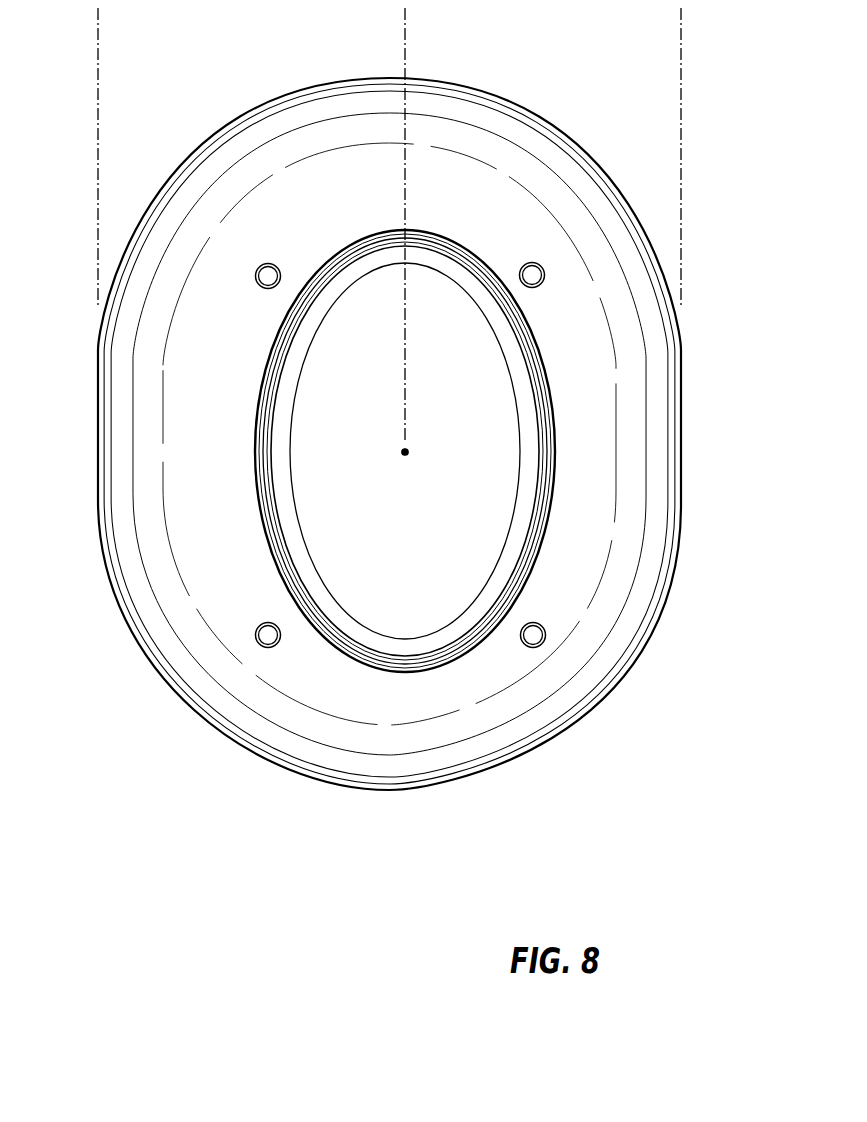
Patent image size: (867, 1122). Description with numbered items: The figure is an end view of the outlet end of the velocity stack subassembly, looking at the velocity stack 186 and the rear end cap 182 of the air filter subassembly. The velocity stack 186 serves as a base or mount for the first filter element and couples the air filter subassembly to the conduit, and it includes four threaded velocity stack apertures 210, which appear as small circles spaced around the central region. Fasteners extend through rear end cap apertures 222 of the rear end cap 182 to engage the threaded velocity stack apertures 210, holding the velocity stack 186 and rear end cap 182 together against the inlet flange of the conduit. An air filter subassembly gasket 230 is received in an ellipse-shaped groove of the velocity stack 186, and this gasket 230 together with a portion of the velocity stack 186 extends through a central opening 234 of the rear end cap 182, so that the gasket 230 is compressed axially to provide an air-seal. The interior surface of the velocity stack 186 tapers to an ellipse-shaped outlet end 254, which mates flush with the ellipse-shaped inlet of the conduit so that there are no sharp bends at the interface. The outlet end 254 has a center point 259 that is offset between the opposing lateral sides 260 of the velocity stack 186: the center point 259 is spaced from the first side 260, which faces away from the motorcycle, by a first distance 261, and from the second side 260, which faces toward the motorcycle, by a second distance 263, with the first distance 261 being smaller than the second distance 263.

The rear end cap 182 is at (633, 662).
The velocity stack 186 is at (518, 515).
The threaded velocity stack apertures 210 is at (268, 276).
The rear end cap apertures 222 is at (274, 265).
The air filter subassembly gasket 230 is at (440, 240).
The central opening 234 is at (262, 537).
The outlet end 254 is at (396, 640).
The center point 259 is at (405, 456).
The lateral sides 260 is at (97, 417).
The first distance 261 is at (405, 28).
The second distance 263 is at (405, 28).